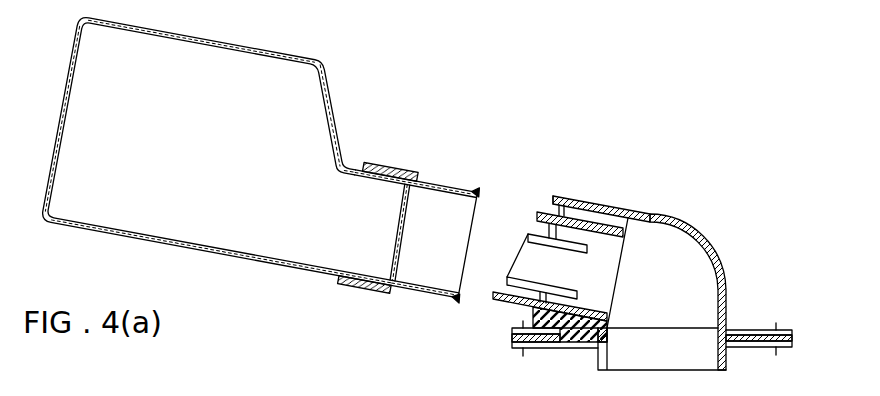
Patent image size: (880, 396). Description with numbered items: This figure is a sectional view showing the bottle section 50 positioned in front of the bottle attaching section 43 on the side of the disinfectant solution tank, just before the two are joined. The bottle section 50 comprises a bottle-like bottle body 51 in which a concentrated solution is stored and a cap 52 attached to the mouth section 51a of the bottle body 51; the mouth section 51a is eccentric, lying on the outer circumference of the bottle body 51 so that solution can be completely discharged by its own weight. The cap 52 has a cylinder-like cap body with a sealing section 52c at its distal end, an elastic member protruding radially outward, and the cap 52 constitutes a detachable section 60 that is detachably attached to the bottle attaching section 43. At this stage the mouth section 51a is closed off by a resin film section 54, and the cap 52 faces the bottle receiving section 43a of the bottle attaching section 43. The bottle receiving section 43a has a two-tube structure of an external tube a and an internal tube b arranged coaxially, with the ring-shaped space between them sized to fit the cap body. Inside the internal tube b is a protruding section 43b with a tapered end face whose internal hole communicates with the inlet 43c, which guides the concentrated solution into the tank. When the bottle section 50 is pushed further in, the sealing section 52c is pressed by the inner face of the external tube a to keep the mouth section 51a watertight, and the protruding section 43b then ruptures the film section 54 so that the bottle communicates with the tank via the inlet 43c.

The bottle section 50 is at (266, 195).
The bottle body 51 is at (263, 270).
The mouth section 51a is at (374, 265).
The cap 52 is at (435, 178).
The sealing section 52c is at (452, 300).
The film section 54 is at (408, 215).
The detachable section 60 is at (418, 300).
The bottle attaching section 43 is at (636, 267).
The bottle receiving section 43a is at (603, 207).
The protruding section 43b is at (512, 298).
The inlet 43c is at (693, 303).
The external tube a is at (570, 197).
The internal tube b is at (578, 217).